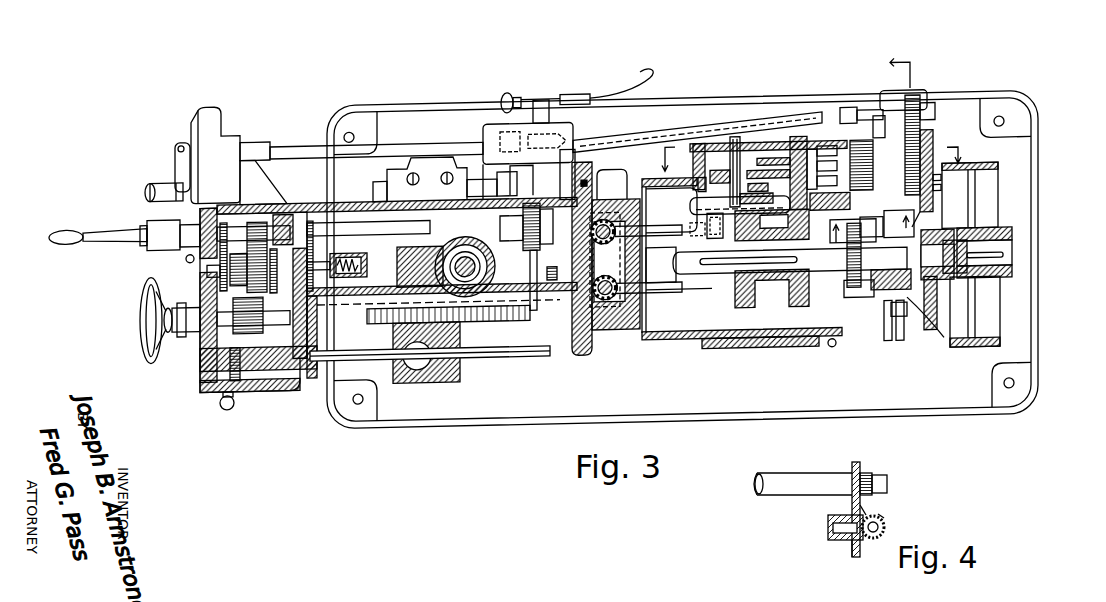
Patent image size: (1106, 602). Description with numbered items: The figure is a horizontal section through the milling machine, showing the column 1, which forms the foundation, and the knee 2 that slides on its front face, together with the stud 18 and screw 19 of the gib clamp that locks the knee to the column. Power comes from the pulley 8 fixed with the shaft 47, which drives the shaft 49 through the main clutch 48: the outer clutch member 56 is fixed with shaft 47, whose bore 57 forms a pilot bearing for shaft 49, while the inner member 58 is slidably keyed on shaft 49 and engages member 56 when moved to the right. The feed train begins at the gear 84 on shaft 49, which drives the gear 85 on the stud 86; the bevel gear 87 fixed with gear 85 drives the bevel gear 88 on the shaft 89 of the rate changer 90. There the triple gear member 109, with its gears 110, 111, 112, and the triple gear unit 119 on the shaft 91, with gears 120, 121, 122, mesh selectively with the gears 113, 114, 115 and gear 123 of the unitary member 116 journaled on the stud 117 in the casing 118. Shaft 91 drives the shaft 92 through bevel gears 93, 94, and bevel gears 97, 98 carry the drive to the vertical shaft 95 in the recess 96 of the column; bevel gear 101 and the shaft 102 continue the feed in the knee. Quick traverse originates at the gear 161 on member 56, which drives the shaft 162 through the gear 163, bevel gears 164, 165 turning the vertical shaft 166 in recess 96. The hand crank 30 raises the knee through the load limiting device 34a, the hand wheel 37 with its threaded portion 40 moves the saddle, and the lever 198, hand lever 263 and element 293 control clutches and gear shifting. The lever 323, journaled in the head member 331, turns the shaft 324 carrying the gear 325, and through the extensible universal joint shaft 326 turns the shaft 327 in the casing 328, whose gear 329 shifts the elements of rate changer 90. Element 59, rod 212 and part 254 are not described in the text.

In FIG. 3, the column 1 is at (661, 340).
In FIG. 3, the knee 2 is at (357, 194).
In FIG. 3, the pulley 8 is at (990, 207).
In FIG. 3, the stud 18 is at (811, 154).
In FIG. 3, the screw 19 is at (906, 144).
In FIG. 3, the hand crank 30 is at (96, 229).
In FIG. 3, the load limiting device 34a is at (355, 250).
In FIG. 3, the hand wheel 37 is at (140, 273).
In FIG. 3, the threaded portion of shaft 38 40 is at (489, 319).
In FIG. 3, the shaft 47 is at (1014, 251).
In FIG. 3, the main clutch 48 is at (922, 331).
In FIG. 3, the shaft 49 is at (712, 275).
In FIG. 4, the shaft 49 is at (800, 480).
In FIG. 3, the outer clutch member 56 is at (923, 310).
In FIG. 3, the bore 57 is at (934, 264).
In FIG. 3, the inner clutch member 58 is at (892, 322).
In FIG. 3, the block 59 is at (874, 285).
In FIG. 3, the gear 84 is at (851, 228).
In FIG. 4, the gear 84 is at (860, 462).
In FIG. 3, the gear 85 is at (846, 300).
In FIG. 4, the gear 85 is at (850, 552).
In FIG. 4, the stud 86 is at (828, 526).
In FIG. 3, the bevel gear 87 is at (847, 276).
In FIG. 4, the bevel gear 87 is at (864, 512).
In FIG. 3, the bevel gear 88 is at (863, 238).
In FIG. 4, the bevel gear 88 is at (884, 518).
In FIG. 3, the shaft 89 is at (867, 160).
In FIG. 4, the shaft 89 is at (885, 523).
In FIG. 3, the rate changer 90 is at (838, 166).
In FIG. 3, the shaft 91 is at (733, 143).
In FIG. 3, the shaft 92 is at (697, 221).
In FIG. 3, the bevel gear 93 is at (772, 225).
In FIG. 3, the bevel gear 94 is at (718, 239).
In FIG. 3, the vertical shaft 95 is at (606, 219).
In FIG. 3, the recess 96 is at (630, 266).
In FIG. 3, the bevel gear 97 is at (626, 218).
In FIG. 3, the bevel gear 98 is at (603, 275).
In FIG. 3, the bevel gear 101 is at (565, 240).
In FIG. 3, the shaft 102 is at (418, 219).
In FIG. 3, the triple gear member 109 is at (854, 142).
In FIG. 3, the gear 110 is at (928, 140).
In FIG. 3, the gear 111 is at (936, 184).
In FIG. 3, the gear 112 is at (937, 193).
In FIG. 3, the gear 113 is at (827, 151).
In FIG. 3, the gear 114 is at (827, 166).
In FIG. 3, the gear 115 is at (827, 181).
In FIG. 3, the unitary gear member 116 is at (774, 158).
In FIG. 3, the stud 117 is at (799, 140).
In FIG. 3, the casing 118 is at (818, 150).
In FIG. 3, the triple gear unit 119 is at (742, 160).
In FIG. 3, the gear 120 is at (698, 181).
In FIG. 3, the gear 121 is at (690, 203).
In FIG. 3, the gear 122 is at (706, 215).
In FIG. 3, the gear 123 is at (757, 188).
In FIG. 3, the gear 161 is at (898, 309).
In FIG. 3, the shaft 162 is at (703, 294).
In FIG. 3, the gear 163 is at (884, 306).
In FIG. 3, the bevel gear 164 is at (651, 291).
In FIG. 3, the bevel gear 165 is at (609, 298).
In FIG. 3, the shaft 166 is at (588, 339).
In FIG. 3, the lever 198 is at (507, 89).
In FIG. 3, the rod 212 is at (492, 354).
In FIG. 3, the ball 254 is at (235, 396).
In FIG. 3, the hand lever 263 is at (646, 79).
In FIG. 3, the manually operable element 293 is at (140, 222).
In FIG. 3, the lever 323 is at (174, 168).
In FIG. 3, the shaft 324 is at (290, 137).
In FIG. 3, the gear 325 is at (485, 129).
In FIG. 3, the extensible universal joint shaft 326 is at (640, 120).
In FIG. 3, the shaft 327 is at (856, 111).
In FIG. 3, the casing 328 is at (930, 98).
In FIG. 3, the gear 329 is at (921, 113).
In FIG. 3, the head member 331 is at (227, 98).